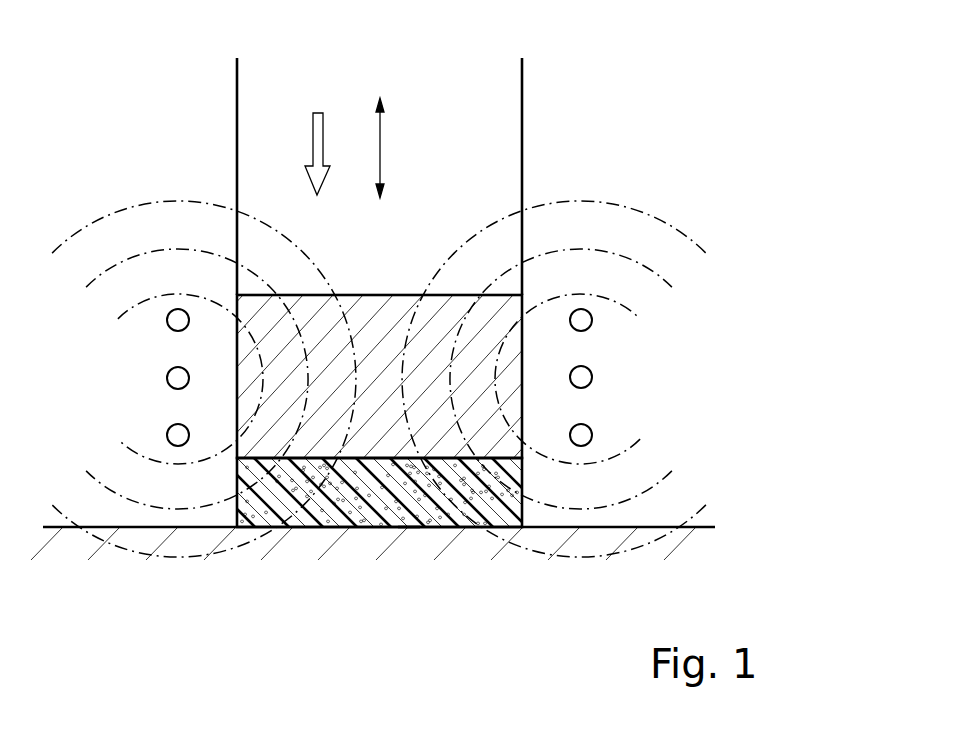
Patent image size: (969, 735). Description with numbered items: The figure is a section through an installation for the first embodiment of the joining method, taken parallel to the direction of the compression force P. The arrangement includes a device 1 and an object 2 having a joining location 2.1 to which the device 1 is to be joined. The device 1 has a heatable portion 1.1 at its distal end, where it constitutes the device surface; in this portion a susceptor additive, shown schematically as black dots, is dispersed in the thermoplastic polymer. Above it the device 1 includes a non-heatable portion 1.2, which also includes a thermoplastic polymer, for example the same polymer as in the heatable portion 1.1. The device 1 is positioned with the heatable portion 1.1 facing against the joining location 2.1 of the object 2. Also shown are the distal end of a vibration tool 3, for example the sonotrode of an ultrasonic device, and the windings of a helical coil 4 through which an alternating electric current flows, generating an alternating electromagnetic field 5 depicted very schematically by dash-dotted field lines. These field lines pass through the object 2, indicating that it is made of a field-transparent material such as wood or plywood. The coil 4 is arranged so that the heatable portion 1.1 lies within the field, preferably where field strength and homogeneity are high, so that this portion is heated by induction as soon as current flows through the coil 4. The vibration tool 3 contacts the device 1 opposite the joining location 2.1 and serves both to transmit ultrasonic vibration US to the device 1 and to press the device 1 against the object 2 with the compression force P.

The device 1 is at (379, 480).
The heatable portion 1.1 is at (323, 495).
The non-heatable portion 1.2 is at (358, 337).
The object 2 is at (287, 561).
The joining location 2.1 is at (409, 510).
The vibration tool 3 is at (390, 247).
The helical coil 4 is at (585, 378).
The alternating electromagnetic field 5 is at (632, 243).
The compression force P is at (317, 135).
The ultrasonic vibration US is at (382, 148).